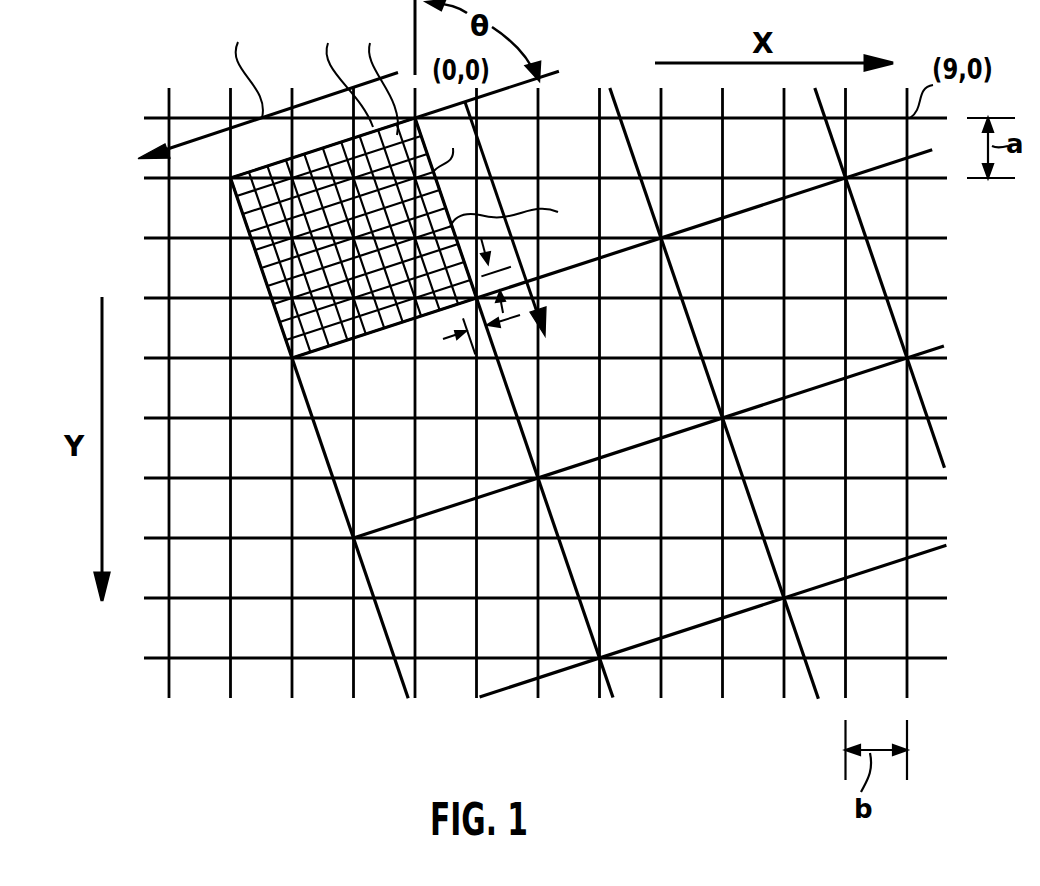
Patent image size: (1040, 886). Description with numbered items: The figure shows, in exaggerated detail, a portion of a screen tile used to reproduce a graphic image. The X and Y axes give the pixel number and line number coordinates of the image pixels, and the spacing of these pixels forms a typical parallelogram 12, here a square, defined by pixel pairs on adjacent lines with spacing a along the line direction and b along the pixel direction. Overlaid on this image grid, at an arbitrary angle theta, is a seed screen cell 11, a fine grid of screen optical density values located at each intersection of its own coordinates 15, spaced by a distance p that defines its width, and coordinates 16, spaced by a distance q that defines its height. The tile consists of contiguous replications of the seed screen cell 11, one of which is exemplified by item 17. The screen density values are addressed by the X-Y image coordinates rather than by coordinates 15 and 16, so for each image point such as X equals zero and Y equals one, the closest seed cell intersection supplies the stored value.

The seed screen cell 11 is at (212, 228).
The parallelogram 12 is at (890, 578).
The seed screen cell width coordinates 15 is at (262, 118).
The seed screen cell height coordinates 16 is at (490, 176).
The replication of the seed screen cell 17 is at (642, 406).